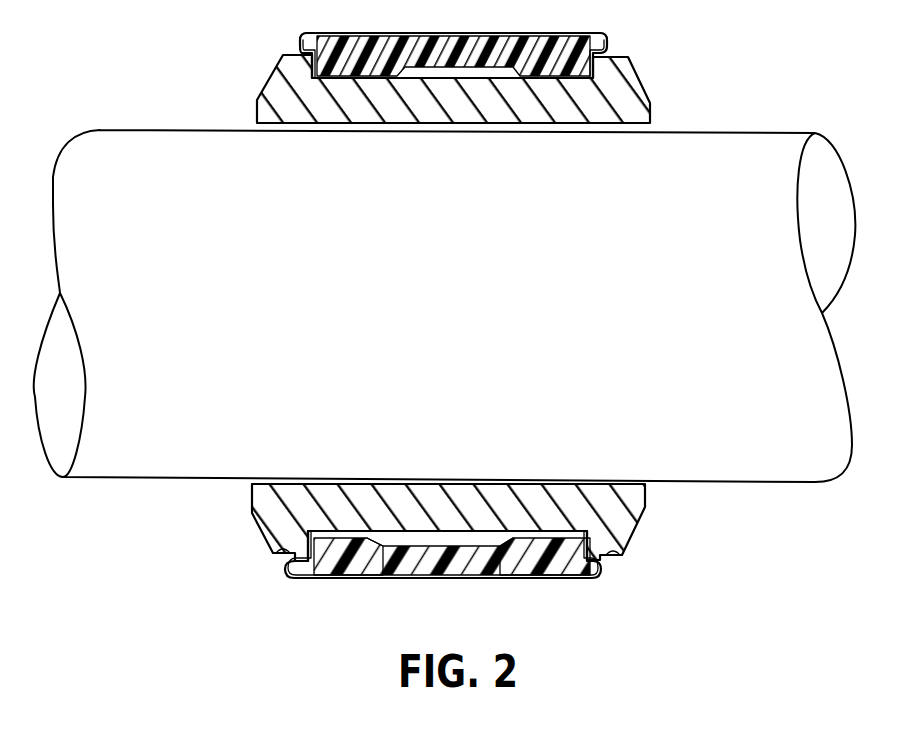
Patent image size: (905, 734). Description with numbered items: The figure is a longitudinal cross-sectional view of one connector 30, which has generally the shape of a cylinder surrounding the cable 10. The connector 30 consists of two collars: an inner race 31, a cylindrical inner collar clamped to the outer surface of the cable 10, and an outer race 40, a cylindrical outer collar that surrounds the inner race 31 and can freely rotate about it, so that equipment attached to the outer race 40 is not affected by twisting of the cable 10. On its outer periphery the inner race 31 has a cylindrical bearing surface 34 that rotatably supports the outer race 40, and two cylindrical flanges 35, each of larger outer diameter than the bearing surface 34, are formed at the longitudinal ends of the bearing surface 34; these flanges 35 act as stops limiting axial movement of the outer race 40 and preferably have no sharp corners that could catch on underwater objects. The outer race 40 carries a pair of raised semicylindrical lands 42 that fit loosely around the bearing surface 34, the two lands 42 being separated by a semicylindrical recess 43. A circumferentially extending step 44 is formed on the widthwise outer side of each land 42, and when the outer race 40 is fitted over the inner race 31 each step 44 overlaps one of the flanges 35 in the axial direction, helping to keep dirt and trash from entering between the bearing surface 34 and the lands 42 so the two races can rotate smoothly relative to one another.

The cable 10 is at (126, 130).
The connector 30 is at (487, 64).
The inner race 31 is at (258, 117).
The bearing surface 34 is at (450, 72).
The flanges 35 is at (300, 50).
The outer race 40 is at (454, 554).
The lands 42 is at (372, 528).
The recess 43 is at (456, 545).
The step 44 is at (274, 556).